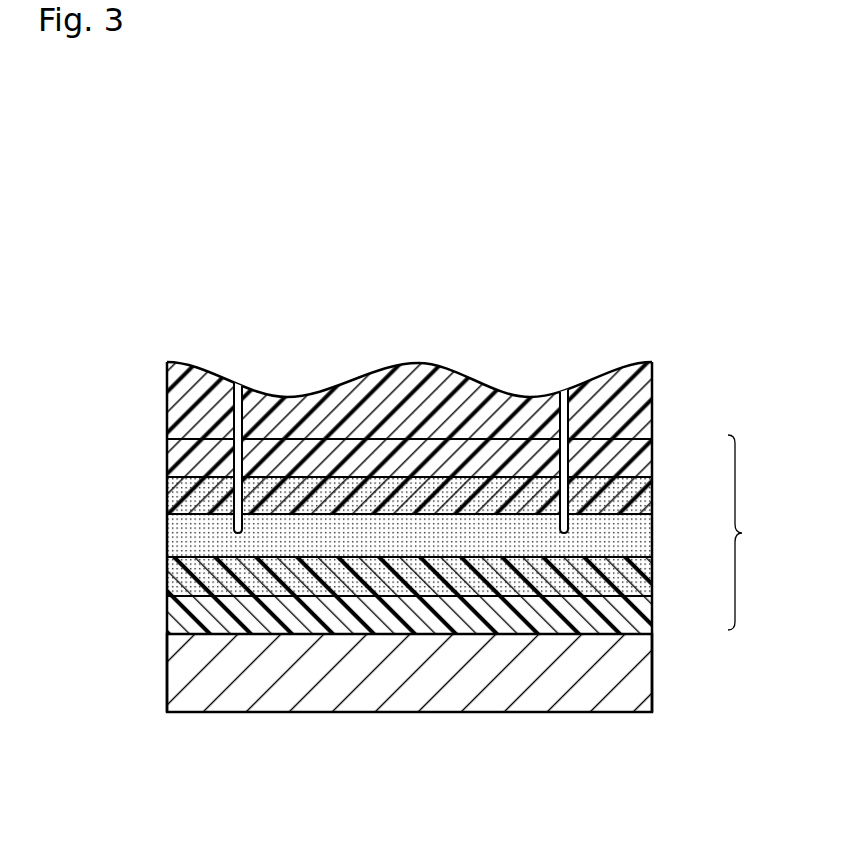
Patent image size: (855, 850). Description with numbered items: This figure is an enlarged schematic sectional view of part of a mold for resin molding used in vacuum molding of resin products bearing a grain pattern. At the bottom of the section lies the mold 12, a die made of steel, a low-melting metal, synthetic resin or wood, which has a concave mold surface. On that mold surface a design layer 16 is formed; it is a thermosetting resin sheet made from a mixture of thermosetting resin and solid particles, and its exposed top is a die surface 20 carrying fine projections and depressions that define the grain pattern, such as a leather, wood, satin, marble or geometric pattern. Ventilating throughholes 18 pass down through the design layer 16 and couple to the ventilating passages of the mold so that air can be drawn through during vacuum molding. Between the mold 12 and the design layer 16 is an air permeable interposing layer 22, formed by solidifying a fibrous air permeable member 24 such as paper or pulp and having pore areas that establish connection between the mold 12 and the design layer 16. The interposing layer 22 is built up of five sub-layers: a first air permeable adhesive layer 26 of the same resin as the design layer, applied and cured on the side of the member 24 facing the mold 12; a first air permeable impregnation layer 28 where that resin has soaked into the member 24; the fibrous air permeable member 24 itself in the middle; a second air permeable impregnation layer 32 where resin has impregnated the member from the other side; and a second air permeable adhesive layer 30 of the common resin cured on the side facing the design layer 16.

The mold 12 is at (635, 677).
The design layer 16 is at (636, 404).
The ventilating throughholes 18 is at (236, 420).
The die surface 20 is at (418, 362).
The air permeable interposing layer 22 is at (754, 532).
The air permeable member 24 is at (630, 535).
The first air permeable adhesive layer 26 is at (640, 615).
The first air permeable impregnation layer 28 is at (640, 573).
The second air permeable adhesive layer 30 is at (642, 455).
The second air permeable impregnation layer 32 is at (643, 495).